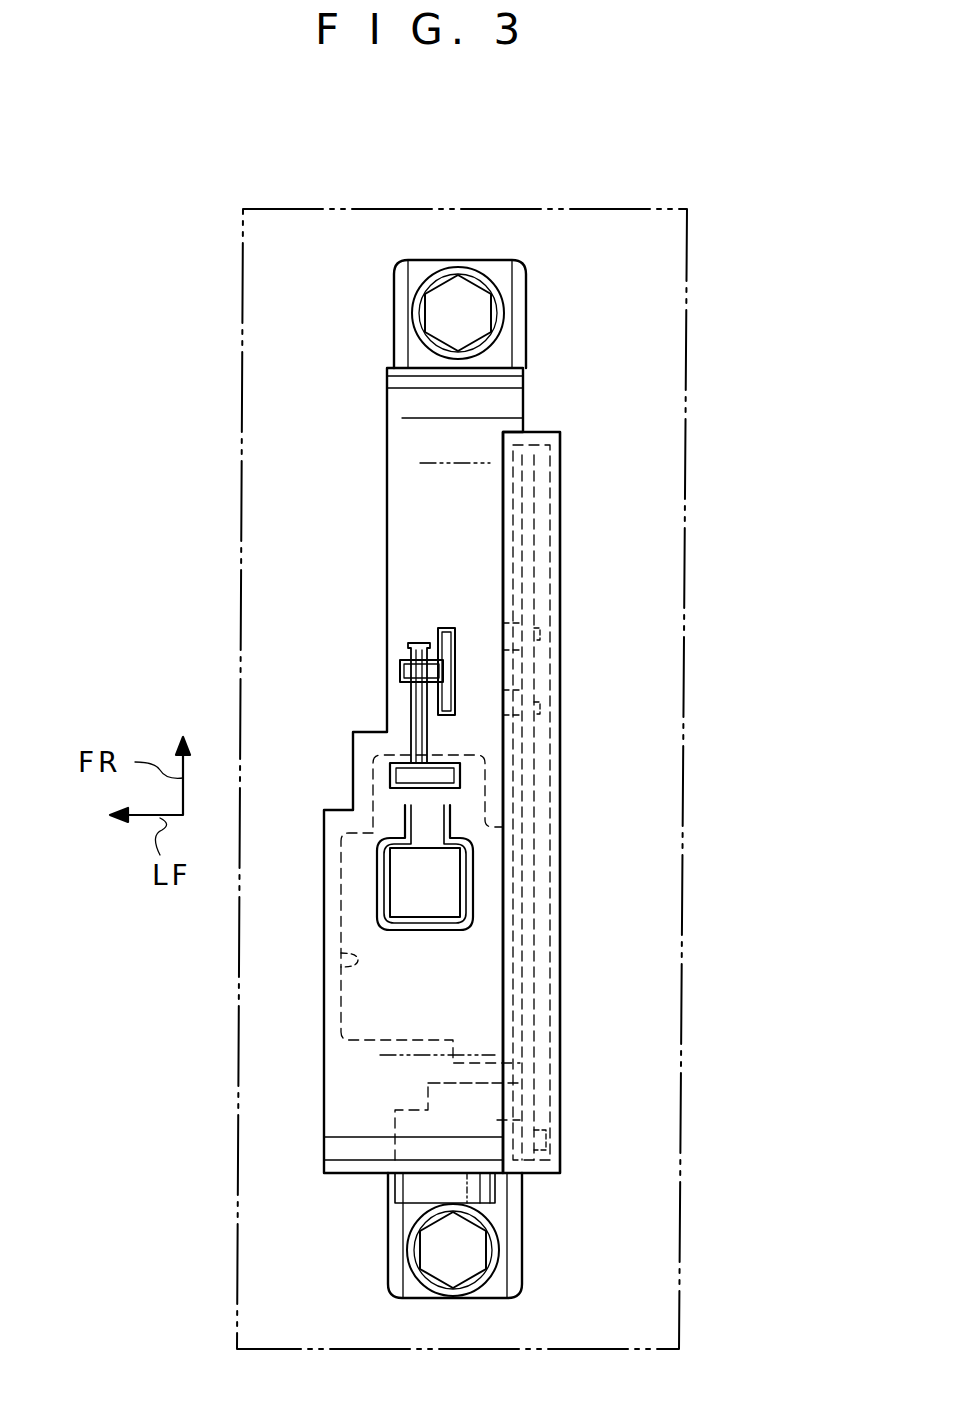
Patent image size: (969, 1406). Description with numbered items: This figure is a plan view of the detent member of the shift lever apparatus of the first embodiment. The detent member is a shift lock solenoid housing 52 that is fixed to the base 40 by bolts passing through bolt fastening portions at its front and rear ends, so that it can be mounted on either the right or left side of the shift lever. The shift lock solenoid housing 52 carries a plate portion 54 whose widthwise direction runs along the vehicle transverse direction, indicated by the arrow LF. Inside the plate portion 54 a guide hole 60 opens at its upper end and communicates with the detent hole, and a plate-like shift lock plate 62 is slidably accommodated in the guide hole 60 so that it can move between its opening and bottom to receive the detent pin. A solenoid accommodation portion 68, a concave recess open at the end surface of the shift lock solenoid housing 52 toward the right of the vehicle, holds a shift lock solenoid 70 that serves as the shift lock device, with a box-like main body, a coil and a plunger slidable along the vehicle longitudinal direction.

The base 40 is at (687, 365).
The shift lock solenoid housing 52 is at (556, 366).
The plate portion 54 is at (523, 410).
The guide hole 60 is at (420, 704).
The shift lock plate 62 is at (430, 733).
The solenoid accommodation portion 68 is at (341, 978).
The shift lock solenoid 70 is at (389, 1121).